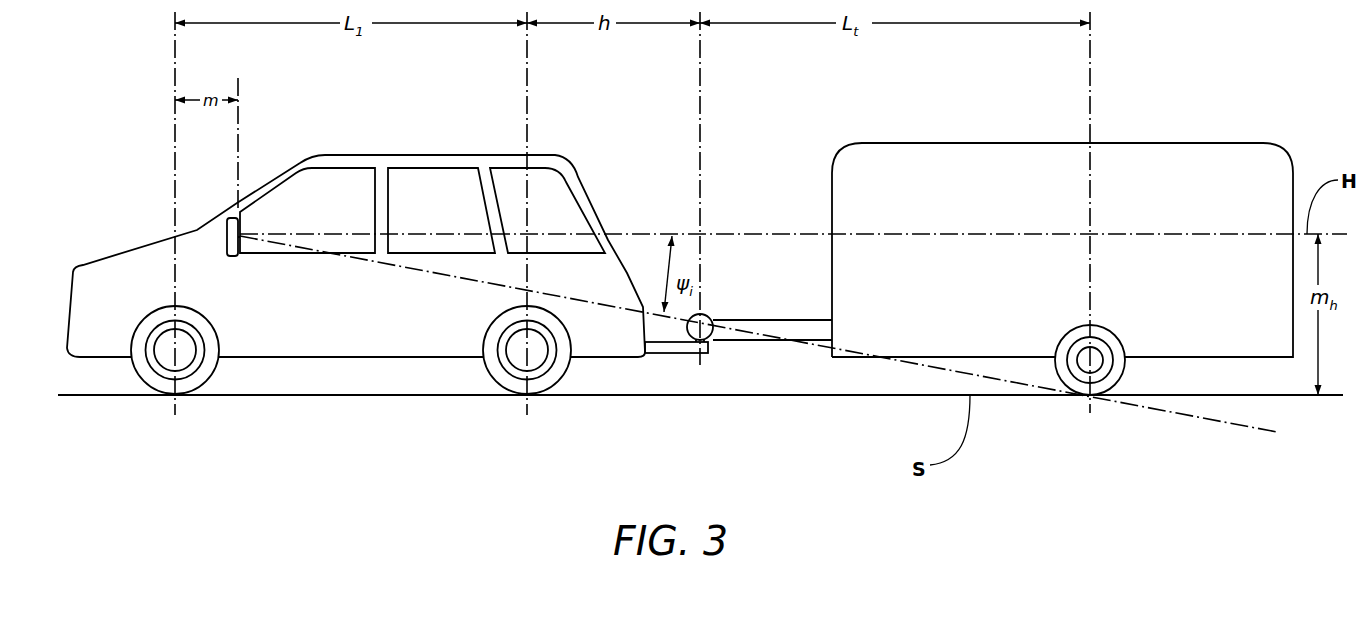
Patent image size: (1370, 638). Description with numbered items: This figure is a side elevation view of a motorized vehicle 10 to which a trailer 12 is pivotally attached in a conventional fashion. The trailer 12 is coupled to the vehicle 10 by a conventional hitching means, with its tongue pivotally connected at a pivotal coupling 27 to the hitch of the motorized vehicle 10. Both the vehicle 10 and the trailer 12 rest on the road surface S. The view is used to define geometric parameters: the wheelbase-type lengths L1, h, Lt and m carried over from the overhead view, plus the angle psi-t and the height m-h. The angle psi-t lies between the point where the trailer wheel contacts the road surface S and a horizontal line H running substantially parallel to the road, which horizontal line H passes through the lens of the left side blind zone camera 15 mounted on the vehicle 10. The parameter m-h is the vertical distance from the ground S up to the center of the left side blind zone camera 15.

The motorized vehicle 10 is at (120, 277).
The trailer 12 is at (1182, 163).
The left side blind zone camera 15 is at (243, 244).
The pivotal coupling 27 is at (713, 332).